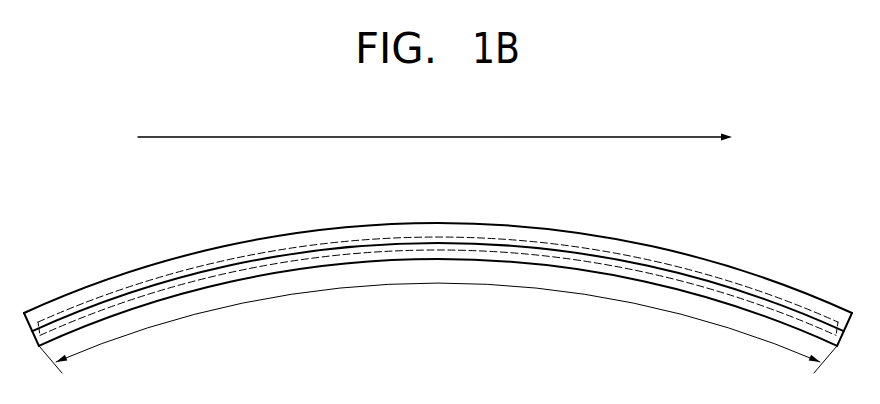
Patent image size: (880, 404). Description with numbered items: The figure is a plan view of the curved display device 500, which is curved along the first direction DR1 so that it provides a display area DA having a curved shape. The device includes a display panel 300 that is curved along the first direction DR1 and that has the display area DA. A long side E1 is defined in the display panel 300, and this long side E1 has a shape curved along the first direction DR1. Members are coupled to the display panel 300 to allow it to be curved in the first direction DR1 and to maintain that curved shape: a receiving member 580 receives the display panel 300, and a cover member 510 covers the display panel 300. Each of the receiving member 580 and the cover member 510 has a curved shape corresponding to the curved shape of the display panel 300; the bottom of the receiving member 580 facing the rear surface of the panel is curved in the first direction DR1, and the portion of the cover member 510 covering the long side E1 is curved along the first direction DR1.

The display panel 300 is at (202, 267).
The curved display device 500 is at (438, 262).
The cover member 510 is at (365, 255).
The receiving member 580 is at (438, 256).
The long side E1 is at (656, 262).
The display area DA is at (438, 328).
The first direction DR1 is at (452, 139).